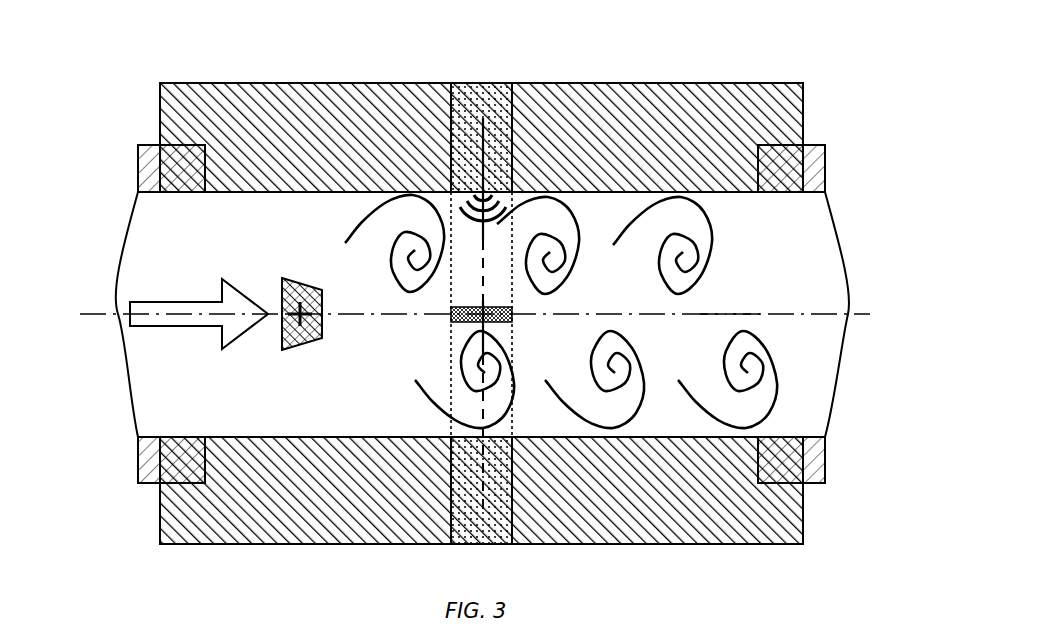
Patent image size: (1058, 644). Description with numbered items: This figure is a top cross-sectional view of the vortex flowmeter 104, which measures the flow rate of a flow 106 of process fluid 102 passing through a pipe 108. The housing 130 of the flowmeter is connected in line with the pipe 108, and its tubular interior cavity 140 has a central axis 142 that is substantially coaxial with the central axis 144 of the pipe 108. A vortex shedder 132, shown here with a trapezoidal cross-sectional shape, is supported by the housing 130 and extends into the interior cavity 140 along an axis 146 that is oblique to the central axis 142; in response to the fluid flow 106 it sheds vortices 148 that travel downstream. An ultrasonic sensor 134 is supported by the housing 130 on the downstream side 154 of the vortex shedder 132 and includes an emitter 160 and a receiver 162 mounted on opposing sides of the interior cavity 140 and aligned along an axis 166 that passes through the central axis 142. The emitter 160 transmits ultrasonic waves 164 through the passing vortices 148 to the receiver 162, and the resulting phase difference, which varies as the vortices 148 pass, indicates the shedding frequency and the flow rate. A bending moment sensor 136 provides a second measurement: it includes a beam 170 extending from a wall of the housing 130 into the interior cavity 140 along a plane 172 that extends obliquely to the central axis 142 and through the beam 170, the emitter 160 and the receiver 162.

The process fluid 102 is at (155, 243).
The vortex flowmeter 104 is at (134, 45).
The flow 106 is at (175, 328).
The pipe 108 is at (148, 170).
The housing 130 is at (170, 108).
The vortex shedder 132 is at (293, 352).
The ultrasonic sensor 134 is at (437, 57).
The bending moment sensor 136 is at (423, 336).
The interior cavity 140 is at (266, 420).
The central axis 142 is at (730, 314).
The central axis of the pipe 144 is at (90, 312).
The axis 146 is at (283, 290).
The vortices 148 is at (395, 266).
The downstream side 154 is at (380, 432).
The emitter 160 is at (500, 98).
The receiver 162 is at (465, 545).
The ultrasonic waves 164 is at (508, 188).
The axis 166 is at (479, 138).
The beam 170 is at (498, 325).
The plane 172 is at (483, 487).